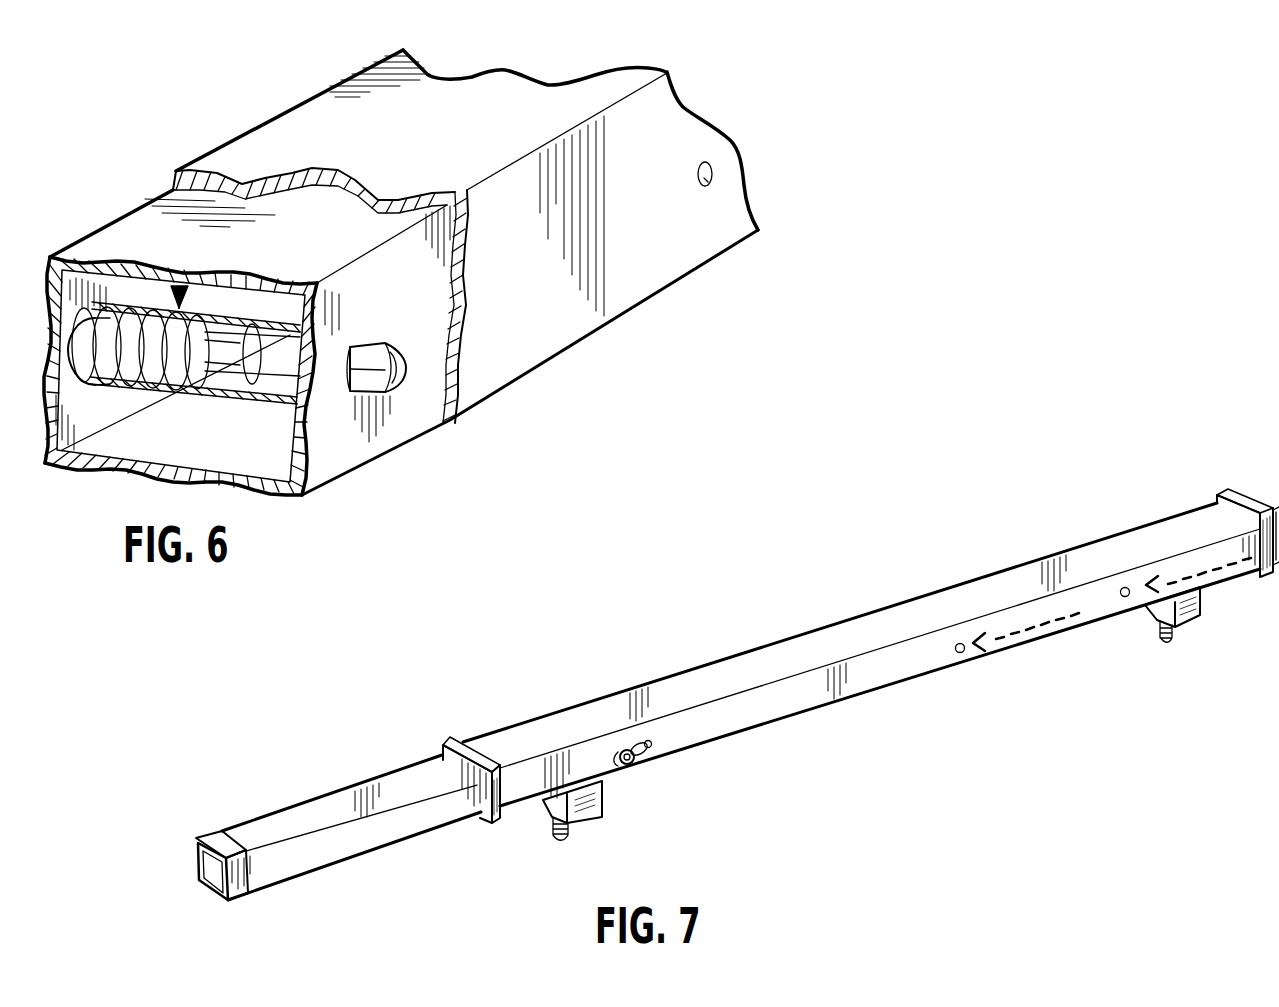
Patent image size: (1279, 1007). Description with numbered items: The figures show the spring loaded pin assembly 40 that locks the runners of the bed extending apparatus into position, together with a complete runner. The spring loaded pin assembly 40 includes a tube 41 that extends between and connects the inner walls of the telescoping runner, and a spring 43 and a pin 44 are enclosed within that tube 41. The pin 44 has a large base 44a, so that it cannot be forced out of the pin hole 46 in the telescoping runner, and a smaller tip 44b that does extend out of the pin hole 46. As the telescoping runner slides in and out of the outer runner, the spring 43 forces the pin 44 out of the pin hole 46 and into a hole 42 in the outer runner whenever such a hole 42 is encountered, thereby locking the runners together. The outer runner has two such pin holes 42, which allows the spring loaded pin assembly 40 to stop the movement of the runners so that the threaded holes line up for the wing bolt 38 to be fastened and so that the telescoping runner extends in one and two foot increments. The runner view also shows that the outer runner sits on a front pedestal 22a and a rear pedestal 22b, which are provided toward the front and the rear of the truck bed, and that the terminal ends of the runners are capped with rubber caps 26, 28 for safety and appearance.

In FIG. 6, the pin hole of the outer runner 42 is at (701, 187).
In FIG. 7, the pin hole of the outer runner 42 is at (958, 647).
In FIG. 6, the pin hole of the telescoping runner 46 is at (360, 343).
In FIG. 6, the spring 43 is at (140, 313).
In FIG. 6, the pin 44 is at (278, 340).
In FIG. 6, the large base 44a is at (227, 373).
In FIG. 6, the smaller tip 44b is at (283, 373).
In FIG. 6, the spring loaded pin assembly 40 is at (148, 390).
In FIG. 6, the tube 41 is at (180, 288).
In FIG. 7, the rubber cap 28 is at (445, 742).
In FIG. 7, the rubber cap 26 is at (1258, 502).
In FIG. 7, the wing bolt 38 is at (626, 757).
In FIG. 7, the front pedestal 22a is at (1197, 610).
In FIG. 7, the rear pedestal 22b is at (582, 807).